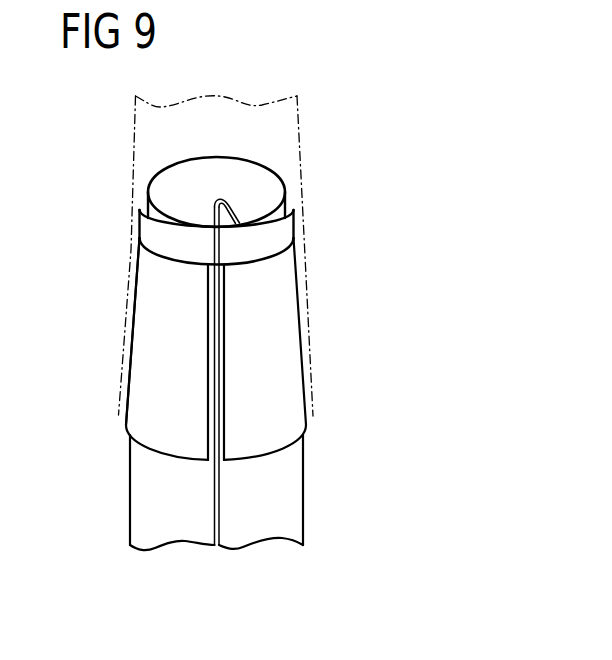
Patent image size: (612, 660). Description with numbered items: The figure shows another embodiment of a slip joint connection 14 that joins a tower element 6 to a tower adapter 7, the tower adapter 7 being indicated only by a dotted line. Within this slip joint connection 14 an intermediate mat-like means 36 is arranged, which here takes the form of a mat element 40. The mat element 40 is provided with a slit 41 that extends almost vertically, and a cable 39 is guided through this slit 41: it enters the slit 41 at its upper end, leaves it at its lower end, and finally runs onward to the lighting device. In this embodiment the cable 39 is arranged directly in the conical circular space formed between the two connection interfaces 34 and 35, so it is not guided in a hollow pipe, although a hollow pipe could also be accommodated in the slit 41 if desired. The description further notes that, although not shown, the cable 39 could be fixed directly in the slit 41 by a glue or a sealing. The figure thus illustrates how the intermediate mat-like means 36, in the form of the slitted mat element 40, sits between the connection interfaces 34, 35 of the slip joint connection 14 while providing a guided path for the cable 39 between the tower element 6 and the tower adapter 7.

The tower element 6 is at (324, 504).
The tower adapter 7 is at (320, 124).
The slip joint connection 14 is at (254, 290).
The connection interface 34 is at (277, 225).
The connection interface 35 is at (310, 358).
The intermediate mat-like means 36 is at (141, 288).
The cable 39 is at (221, 201).
The mat element 40 is at (163, 329).
The slit 41 is at (212, 380).